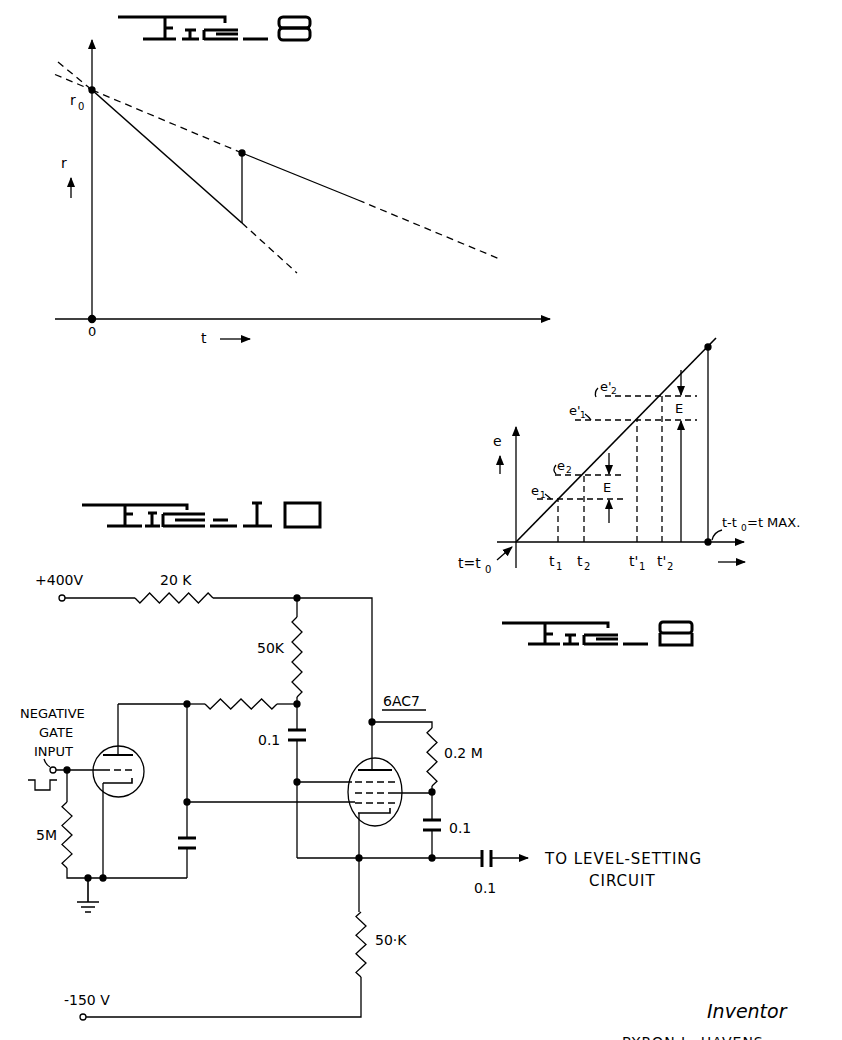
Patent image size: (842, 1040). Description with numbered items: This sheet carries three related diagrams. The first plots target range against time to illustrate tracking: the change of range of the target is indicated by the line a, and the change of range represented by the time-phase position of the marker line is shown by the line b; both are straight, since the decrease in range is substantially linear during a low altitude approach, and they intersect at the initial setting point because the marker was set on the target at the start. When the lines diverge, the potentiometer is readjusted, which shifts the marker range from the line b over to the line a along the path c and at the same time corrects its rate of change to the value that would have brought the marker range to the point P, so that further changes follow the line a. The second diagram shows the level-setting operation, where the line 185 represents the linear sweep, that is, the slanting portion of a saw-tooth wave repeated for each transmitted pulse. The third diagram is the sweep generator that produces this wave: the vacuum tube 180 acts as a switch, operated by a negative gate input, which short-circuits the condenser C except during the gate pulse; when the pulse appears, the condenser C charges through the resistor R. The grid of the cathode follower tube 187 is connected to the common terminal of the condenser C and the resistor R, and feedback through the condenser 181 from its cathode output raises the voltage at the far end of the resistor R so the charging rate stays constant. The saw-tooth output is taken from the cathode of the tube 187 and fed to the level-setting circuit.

In FIG. 10, the vacuum tube 180 is at (146, 761).
In FIG. 10, the condenser 181 is at (306, 737).
In FIG. 9, the line 185 is at (685, 365).
In FIG. 10, the cathode follower tube 187 is at (399, 764).
In FIG. 8, the line a is at (165, 120).
In FIG. 8, the line b is at (193, 191).
In FIG. 8, the path c is at (246, 210).
In FIG. 8, the point P is at (240, 142).
In FIG. 10, the resistor R is at (248, 702).
In FIG. 10, the condenser C is at (196, 843).